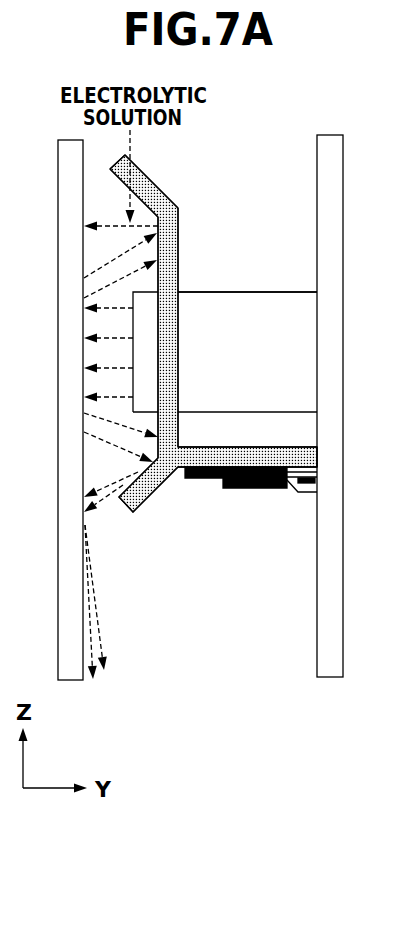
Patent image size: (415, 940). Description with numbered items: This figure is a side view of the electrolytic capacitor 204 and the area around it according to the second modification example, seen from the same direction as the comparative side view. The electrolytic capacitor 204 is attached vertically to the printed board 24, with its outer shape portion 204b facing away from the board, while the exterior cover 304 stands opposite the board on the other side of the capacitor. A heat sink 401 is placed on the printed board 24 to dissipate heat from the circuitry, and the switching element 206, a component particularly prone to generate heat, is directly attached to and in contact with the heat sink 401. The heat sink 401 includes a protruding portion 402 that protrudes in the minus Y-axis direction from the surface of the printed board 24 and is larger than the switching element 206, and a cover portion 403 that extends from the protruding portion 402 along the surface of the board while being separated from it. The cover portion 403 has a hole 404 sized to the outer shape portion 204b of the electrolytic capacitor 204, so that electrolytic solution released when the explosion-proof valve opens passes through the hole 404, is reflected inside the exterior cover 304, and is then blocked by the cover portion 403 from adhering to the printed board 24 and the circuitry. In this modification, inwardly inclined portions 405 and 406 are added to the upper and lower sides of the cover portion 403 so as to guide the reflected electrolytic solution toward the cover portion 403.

The printed board 24 is at (343, 204).
The electrolytic capacitor 204 is at (293, 351).
The outer shape portion 204b is at (283, 292).
The switching element 206 is at (263, 490).
The exterior cover 304 is at (56, 376).
The heat sink 401 is at (297, 449).
The protruding portion 402 is at (210, 458).
The cover portion 403 is at (178, 224).
The hole 404 is at (167, 290).
The inclined portion 405 is at (153, 184).
The inclined portion 406 is at (147, 503).